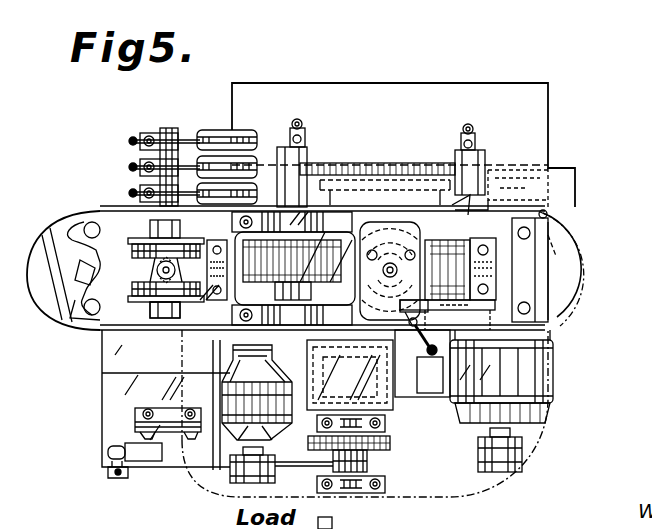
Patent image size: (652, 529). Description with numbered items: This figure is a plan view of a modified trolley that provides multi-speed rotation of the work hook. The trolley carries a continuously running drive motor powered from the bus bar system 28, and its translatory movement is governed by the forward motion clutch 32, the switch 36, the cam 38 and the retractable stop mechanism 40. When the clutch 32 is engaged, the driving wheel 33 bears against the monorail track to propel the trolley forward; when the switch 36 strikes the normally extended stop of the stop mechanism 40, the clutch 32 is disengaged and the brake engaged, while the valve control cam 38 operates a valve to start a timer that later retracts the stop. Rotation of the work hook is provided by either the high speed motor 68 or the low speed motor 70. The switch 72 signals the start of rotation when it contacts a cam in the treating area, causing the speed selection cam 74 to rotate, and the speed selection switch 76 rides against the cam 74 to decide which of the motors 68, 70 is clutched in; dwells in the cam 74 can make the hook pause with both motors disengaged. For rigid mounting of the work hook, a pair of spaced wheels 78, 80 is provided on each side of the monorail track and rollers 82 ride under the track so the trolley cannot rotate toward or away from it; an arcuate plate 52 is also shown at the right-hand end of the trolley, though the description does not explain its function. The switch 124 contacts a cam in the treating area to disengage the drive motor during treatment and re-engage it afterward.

The bus bar system 28 is at (222, 131).
The switch 124 is at (408, 112).
The switch 72 is at (474, 130).
The wheel 78 is at (377, 184).
The driving wheel 33 is at (303, 215).
The speed selection cam 74 is at (386, 300).
The rollers 82 is at (222, 236).
The wheel 80 is at (170, 282).
The arcuate plate 52 is at (578, 278).
The high speed motor 68 is at (545, 262).
The forward motion clutch 32 is at (223, 478).
The retractable stop mechanism 40 is at (350, 434).
The low speed motor 70 is at (553, 408).
The speed selection switch 76 is at (445, 348).
The cam 38 is at (137, 421).
The switch 36 is at (118, 468).